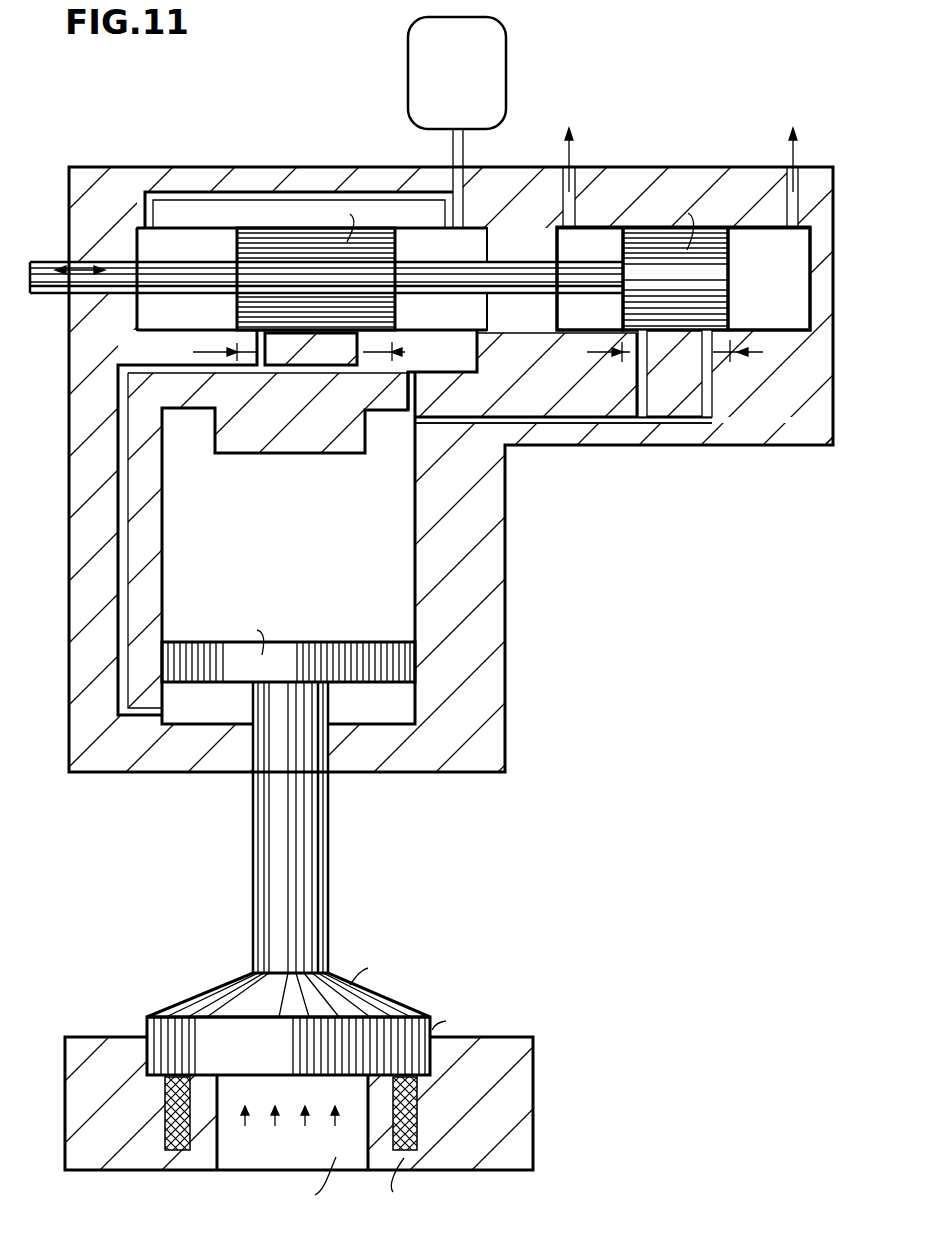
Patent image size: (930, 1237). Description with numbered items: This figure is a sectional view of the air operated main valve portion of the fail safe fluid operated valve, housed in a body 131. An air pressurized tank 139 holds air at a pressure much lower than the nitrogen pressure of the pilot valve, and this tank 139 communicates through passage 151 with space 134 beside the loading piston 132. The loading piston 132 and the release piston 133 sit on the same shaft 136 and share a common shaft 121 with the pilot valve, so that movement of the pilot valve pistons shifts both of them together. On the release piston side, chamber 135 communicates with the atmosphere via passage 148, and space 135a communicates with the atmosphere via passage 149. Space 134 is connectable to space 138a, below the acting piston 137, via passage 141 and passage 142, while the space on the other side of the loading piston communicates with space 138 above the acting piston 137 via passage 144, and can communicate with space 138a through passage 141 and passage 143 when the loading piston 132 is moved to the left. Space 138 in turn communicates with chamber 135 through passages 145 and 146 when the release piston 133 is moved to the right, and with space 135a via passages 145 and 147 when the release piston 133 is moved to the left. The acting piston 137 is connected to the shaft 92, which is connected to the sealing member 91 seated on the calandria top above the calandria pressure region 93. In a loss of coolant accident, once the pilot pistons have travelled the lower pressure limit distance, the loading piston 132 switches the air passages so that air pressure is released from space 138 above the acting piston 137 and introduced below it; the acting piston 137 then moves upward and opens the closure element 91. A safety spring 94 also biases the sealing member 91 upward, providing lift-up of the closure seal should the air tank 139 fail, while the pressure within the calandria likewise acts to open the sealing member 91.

The housing 131 is at (157, 183).
The air pressurized tank 139 is at (499, 66).
The passage 151 is at (463, 155).
The passage 148 is at (568, 188).
The passage 149 is at (793, 172).
The common shaft 121 is at (59, 262).
The loading piston 132 is at (367, 241).
The space 134 is at (163, 257).
The shaft 136 is at (532, 270).
The chamber 135 is at (600, 257).
The space 135a is at (795, 257).
The release piston 133 is at (721, 292).
The passage 142 is at (258, 343).
The passage 143 is at (388, 340).
The passage 144 is at (478, 343).
The passage 145 is at (556, 417).
The passage 146 is at (637, 404).
The passage 147 is at (711, 412).
The space 138 is at (266, 582).
The acting piston 137 is at (288, 650).
The passage 141 is at (165, 713).
The space 138a is at (395, 718).
The shaft 92 is at (330, 838).
The sealing member 91 is at (228, 992).
The calandria pressure chamber 93 is at (278, 1157).
The safety spring 94 is at (165, 1095).